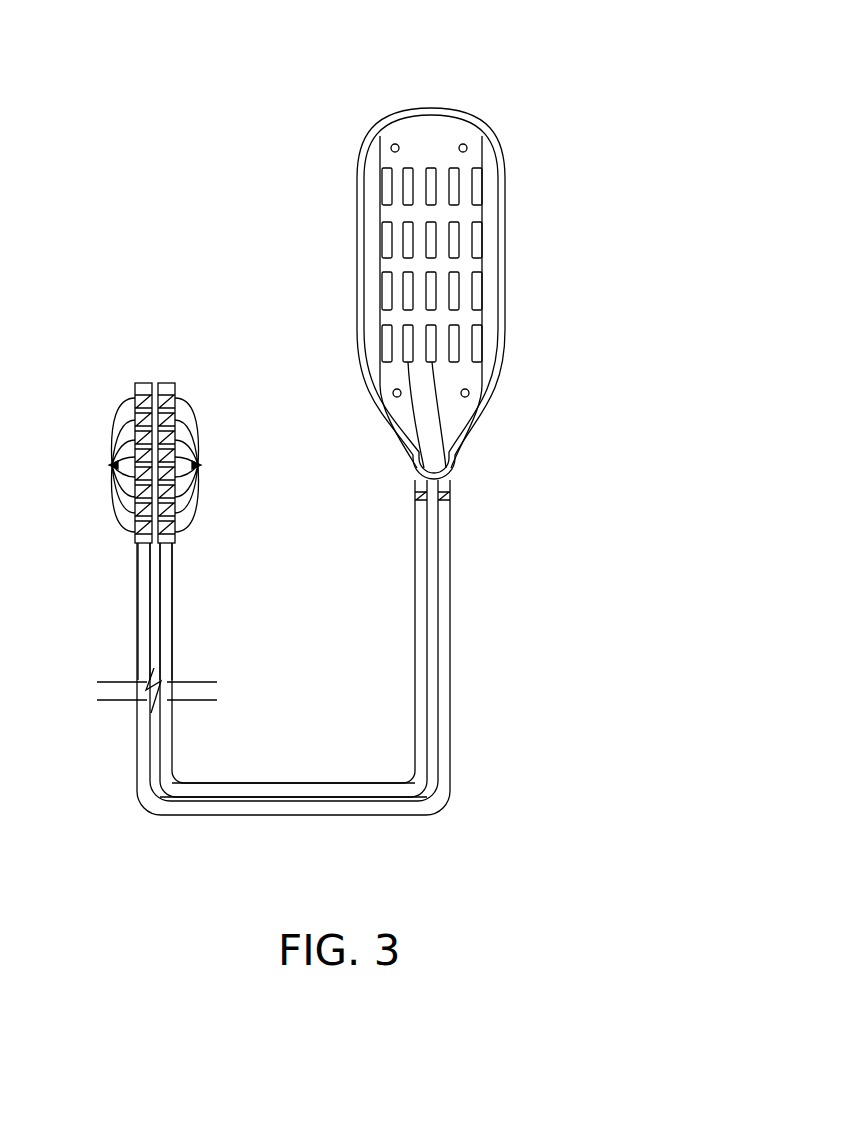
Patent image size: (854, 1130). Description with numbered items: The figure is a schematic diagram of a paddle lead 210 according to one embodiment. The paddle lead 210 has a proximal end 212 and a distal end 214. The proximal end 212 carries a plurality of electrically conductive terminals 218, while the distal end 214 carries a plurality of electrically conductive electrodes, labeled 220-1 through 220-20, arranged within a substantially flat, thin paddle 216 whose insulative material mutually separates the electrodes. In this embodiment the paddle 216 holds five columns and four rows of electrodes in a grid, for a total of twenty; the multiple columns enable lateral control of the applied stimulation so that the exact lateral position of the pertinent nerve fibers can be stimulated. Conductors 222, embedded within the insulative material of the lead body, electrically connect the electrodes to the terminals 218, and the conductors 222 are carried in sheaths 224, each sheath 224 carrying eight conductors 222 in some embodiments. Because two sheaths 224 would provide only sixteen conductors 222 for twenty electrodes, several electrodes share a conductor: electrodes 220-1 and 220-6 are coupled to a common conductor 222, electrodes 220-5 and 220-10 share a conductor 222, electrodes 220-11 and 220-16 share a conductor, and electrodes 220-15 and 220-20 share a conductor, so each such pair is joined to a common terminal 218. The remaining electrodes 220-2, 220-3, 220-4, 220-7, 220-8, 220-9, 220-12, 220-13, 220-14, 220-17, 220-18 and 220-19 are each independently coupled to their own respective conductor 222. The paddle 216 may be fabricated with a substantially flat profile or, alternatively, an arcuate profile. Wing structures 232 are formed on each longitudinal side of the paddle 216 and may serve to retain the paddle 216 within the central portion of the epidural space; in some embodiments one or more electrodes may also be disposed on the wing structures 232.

The paddle lead 210 is at (250, 132).
The proximal end 212 is at (183, 383).
The distal end 214 is at (445, 78).
The paddle 216 is at (420, 128).
The terminals 218 is at (156, 465).
The electrode 220-1 is at (383, 180).
The electrode 220-2 is at (405, 207).
The electrode 220-3 is at (432, 168).
The electrode 220-4 is at (460, 177).
The electrode 220-5 is at (478, 193).
The electrode 220-6 is at (383, 240).
The electrode 220-7 is at (405, 260).
The electrode 220-8 is at (450, 228).
The electrode 220-9 is at (458, 237).
The electrode 220-10 is at (474, 255).
The electrode 220-11 is at (383, 298).
The electrode 220-12 is at (405, 311).
The electrode 220-13 is at (440, 312).
The electrode 220-14 is at (453, 277).
The electrode 220-15 is at (480, 295).
The electrode 220-16 is at (382, 405).
The electrode 220-17 is at (404, 432).
The electrode 220-18 is at (456, 364).
The electrode 220-19 is at (486, 403).
The electrode 220-20 is at (477, 347).
The conductors 222 is at (138, 566).
The sheath 224 is at (268, 805).
The wing structures 232 is at (380, 127).